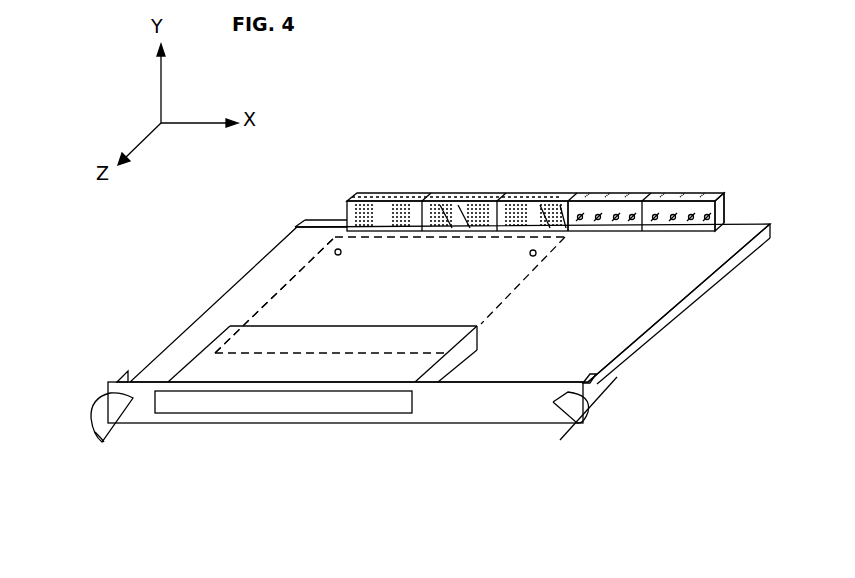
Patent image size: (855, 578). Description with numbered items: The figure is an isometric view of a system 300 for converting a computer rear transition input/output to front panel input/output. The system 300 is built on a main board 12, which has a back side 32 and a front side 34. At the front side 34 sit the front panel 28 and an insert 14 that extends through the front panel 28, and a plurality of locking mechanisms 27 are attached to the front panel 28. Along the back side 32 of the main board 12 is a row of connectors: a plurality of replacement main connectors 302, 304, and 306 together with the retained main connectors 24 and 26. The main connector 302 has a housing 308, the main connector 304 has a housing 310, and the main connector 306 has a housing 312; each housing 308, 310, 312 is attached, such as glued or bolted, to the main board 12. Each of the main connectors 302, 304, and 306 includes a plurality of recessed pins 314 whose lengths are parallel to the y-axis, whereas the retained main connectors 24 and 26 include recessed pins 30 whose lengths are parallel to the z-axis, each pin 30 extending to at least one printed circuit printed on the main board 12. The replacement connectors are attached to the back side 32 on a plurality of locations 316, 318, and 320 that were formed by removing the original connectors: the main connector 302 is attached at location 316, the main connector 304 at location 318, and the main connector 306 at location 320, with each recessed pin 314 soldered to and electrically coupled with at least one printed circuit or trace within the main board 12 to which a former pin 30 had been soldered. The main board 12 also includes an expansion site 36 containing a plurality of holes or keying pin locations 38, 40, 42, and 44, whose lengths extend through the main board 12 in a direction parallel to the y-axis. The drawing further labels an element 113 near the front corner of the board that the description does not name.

The system 300 is at (502, 102).
The main connector 302 is at (523, 219).
The main connector 304 is at (465, 215).
The main connector 306 is at (563, 227).
The housing 308 is at (388, 215).
The housing 310 is at (497, 213).
The housing 312 is at (533, 213).
The recessed pins 314 is at (360, 192).
The location 316 is at (296, 227).
The location 318 is at (448, 218).
The location 320 is at (545, 218).
The main connector 24 is at (588, 197).
The main connector 26 is at (723, 195).
The recessed pins 30 is at (632, 195).
The back side 32 is at (720, 298).
The front side 34 is at (98, 382).
The expansion site 36 is at (505, 300).
The keying pin location 38 is at (341, 255).
The keying pin location 40 is at (531, 256).
The keying pin location 42 is at (414, 372).
The keying pin location 44 is at (222, 372).
The main board 12 is at (633, 333).
The insert 14 is at (222, 406).
The locking mechanisms 27 is at (93, 433).
The front panel 28 is at (450, 410).
The tab 113 is at (610, 382).